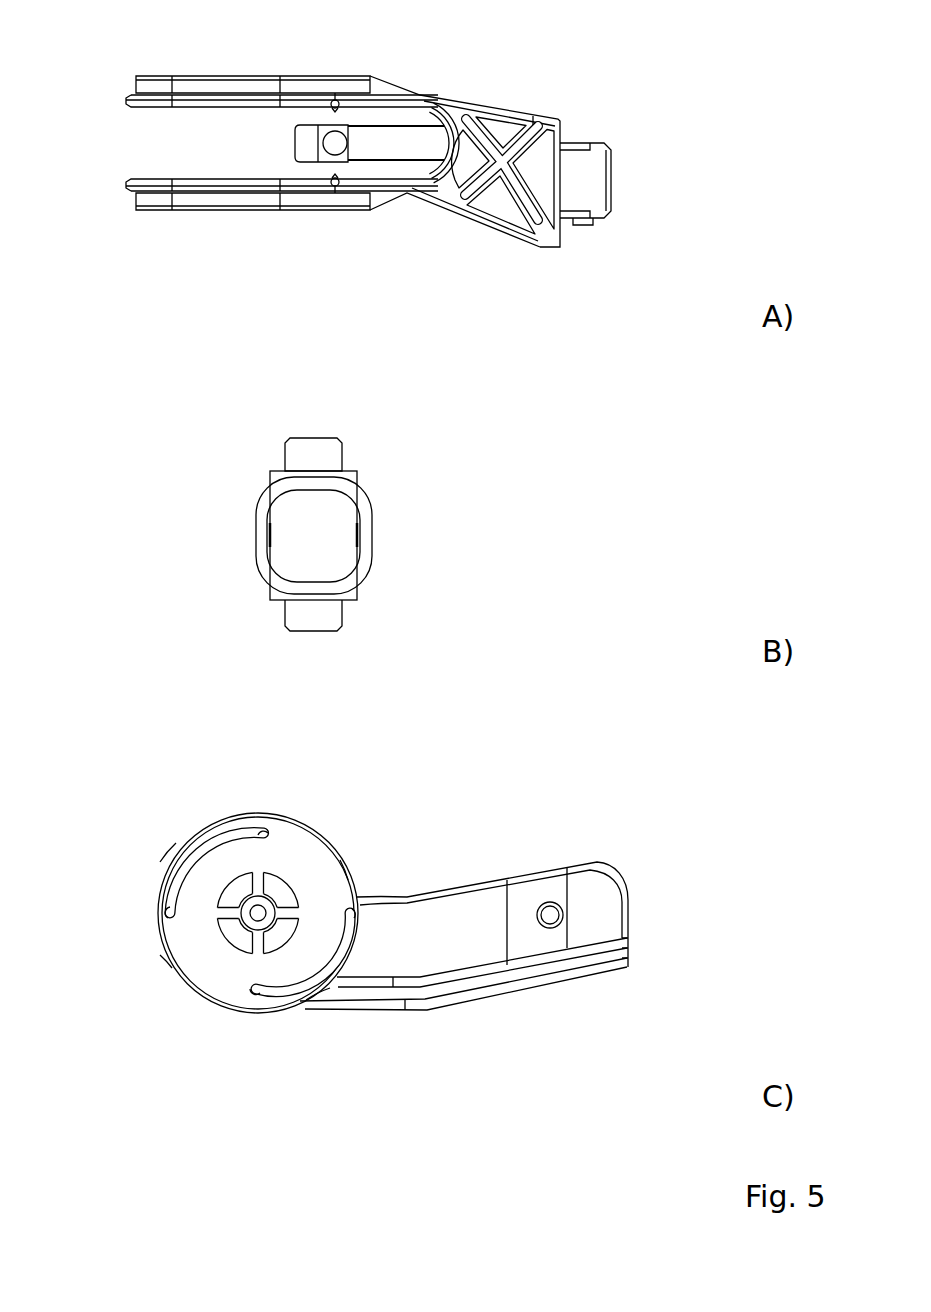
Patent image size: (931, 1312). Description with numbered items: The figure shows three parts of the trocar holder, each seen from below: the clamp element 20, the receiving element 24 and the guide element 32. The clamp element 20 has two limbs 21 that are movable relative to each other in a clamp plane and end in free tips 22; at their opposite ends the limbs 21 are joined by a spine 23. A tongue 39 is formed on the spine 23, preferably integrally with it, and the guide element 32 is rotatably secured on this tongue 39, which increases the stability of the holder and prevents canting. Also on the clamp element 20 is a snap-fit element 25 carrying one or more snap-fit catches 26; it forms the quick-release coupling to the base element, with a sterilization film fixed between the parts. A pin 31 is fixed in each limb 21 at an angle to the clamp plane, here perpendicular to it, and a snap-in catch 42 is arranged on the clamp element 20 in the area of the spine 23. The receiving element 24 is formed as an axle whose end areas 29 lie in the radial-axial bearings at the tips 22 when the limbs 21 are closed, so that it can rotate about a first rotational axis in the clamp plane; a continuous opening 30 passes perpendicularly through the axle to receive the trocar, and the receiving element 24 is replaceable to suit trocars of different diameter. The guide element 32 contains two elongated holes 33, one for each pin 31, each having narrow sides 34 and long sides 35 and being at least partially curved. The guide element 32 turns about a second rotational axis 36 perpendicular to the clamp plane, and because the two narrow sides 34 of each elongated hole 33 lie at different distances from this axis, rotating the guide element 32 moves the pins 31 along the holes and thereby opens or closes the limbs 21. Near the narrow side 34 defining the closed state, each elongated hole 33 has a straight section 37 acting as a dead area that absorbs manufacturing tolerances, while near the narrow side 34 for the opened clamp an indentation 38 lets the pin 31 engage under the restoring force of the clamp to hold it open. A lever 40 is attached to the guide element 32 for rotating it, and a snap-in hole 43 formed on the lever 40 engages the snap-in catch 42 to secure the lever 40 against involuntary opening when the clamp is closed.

In FIG. 5A, the clamp element 20 is at (528, 224).
In FIG. 5A, the limbs 21 is at (222, 76).
In FIG. 5A, the free tips 22 is at (130, 86).
In FIG. 5A, the spine 23 is at (424, 99).
In FIG. 5B, the receiving element 24 is at (258, 519).
In FIG. 5A, the snap-fit element 25 is at (603, 181).
In FIG. 5A, the snap-fit catches 26 is at (578, 142).
In FIG. 5B, the end areas 29 is at (330, 439).
In FIG. 5B, the continuous opening 30 is at (344, 546).
In FIG. 5A, the pins 31 is at (337, 99).
In FIG. 5C, the guide element 32 is at (299, 840).
In FIG. 5C, the elongated holes 33 is at (181, 846).
In FIG. 5C, the narrow sides 34 is at (268, 833).
In FIG. 5C, the long sides 35 is at (170, 868).
In FIG. 5C, the second rotational axis 36 is at (253, 917).
In FIG. 5C, the straight section 37 is at (249, 832).
In FIG. 5C, the indentation 38 is at (338, 870).
In FIG. 5A, the tongue 39 is at (403, 150).
In FIG. 5C, the lever 40 is at (484, 905).
In FIG. 5A, the snap-in catch 42 is at (491, 135).
In FIG. 5C, the snap-in hole 43 is at (551, 918).